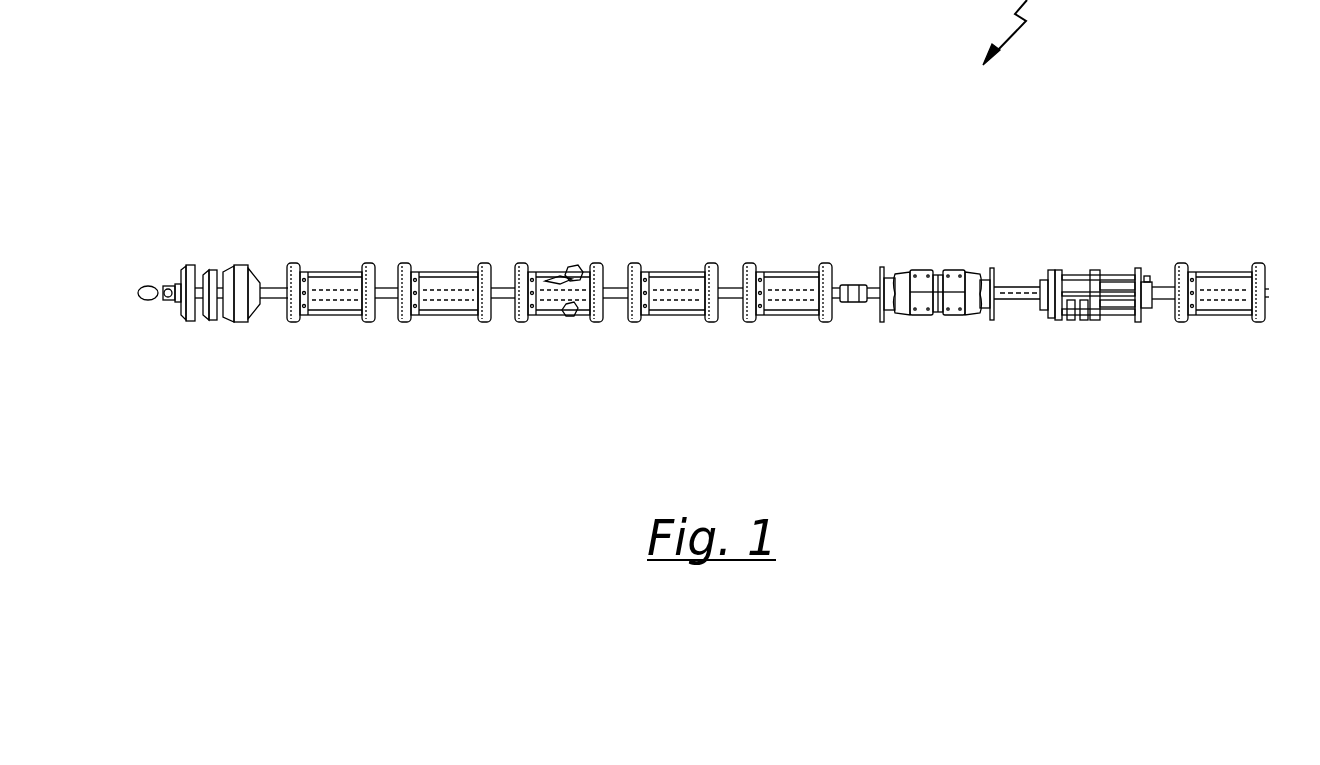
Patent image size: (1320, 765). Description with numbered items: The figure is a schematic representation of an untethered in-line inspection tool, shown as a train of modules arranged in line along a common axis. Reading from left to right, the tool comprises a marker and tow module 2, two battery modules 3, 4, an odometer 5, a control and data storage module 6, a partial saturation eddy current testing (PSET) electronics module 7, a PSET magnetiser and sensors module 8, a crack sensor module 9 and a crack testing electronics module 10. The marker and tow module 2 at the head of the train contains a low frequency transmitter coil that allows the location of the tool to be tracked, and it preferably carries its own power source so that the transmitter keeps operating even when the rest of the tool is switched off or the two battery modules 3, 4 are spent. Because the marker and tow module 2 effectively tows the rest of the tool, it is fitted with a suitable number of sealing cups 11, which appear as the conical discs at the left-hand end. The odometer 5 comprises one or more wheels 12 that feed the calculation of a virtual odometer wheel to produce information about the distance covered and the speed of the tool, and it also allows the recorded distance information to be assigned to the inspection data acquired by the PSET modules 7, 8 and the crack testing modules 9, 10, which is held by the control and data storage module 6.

The marker and tow module 2 is at (253, 303).
The battery module 3 is at (332, 317).
The battery module 4 is at (443, 317).
The odometer 5 is at (550, 317).
The control and data storage module 6 is at (672, 317).
The partial saturation eddy current testing (PSET) electronics module 7 is at (787, 270).
The PSET magnetiser and sensors module 8 is at (922, 317).
The crack sensor module 9 is at (1075, 272).
The crack testing electronics module 10 is at (1212, 318).
The sealing cups 11 is at (187, 315).
The wheels 12 is at (577, 267).